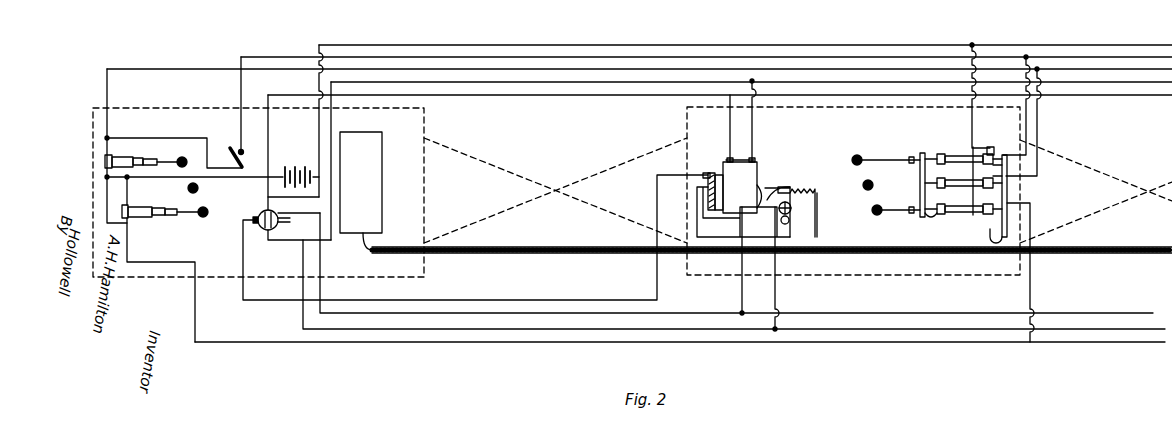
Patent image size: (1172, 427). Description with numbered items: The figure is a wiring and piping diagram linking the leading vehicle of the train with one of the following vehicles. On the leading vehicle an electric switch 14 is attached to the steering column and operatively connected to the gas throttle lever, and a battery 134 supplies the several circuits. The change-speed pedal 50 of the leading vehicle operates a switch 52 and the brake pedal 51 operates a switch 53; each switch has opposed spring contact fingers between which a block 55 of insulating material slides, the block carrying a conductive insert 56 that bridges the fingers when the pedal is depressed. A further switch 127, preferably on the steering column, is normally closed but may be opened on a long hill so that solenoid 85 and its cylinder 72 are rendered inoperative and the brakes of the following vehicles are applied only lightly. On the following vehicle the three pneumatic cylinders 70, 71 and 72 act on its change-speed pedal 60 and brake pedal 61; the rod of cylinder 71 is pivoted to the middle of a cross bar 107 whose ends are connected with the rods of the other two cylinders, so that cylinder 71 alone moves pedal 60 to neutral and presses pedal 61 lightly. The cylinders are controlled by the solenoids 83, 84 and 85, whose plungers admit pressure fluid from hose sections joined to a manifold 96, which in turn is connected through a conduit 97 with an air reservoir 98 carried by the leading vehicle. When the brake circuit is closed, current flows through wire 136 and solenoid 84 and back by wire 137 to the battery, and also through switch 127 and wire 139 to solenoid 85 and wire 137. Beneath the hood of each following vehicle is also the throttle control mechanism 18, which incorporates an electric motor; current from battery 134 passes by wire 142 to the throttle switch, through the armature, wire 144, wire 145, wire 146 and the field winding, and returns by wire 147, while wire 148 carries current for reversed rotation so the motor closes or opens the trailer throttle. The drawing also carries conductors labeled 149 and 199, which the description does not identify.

The electric switch 14 is at (257, 214).
The throttle control mechanism 18 is at (748, 172).
The change-speed pedal 50 is at (205, 218).
The brake pedal 51 is at (182, 157).
The switch 52 is at (145, 218).
The switch 53 is at (125, 157).
The block of insulating material 55 is at (160, 207).
The insert 56 is at (147, 158).
The change-speed pedal 60 is at (872, 210).
The brake pedal 61 is at (857, 155).
The cylinder 70 is at (953, 214).
The cylinder 71 is at (935, 181).
The cylinder 72 is at (948, 154).
The solenoid 83 is at (983, 207).
The solenoid 84 is at (998, 170).
The solenoid 85 is at (991, 147).
The manifold 96 is at (1007, 192).
The conduit 97 is at (873, 247).
The air reservoir 98 is at (370, 187).
The cross bar 107 is at (920, 200).
The switch 127 is at (230, 148).
The battery 134 is at (300, 165).
The wire 136 is at (630, 68).
The wire 137 is at (782, 43).
The wire 139 is at (862, 56).
The wire 142 is at (276, 196).
The wire 144 is at (817, 225).
The wire 145 is at (303, 265).
The wire 146 is at (502, 85).
The wire 147 is at (530, 95).
The wire 148 is at (320, 267).
The conductor 149 is at (580, 300).
The conductor 199 is at (241, 90).